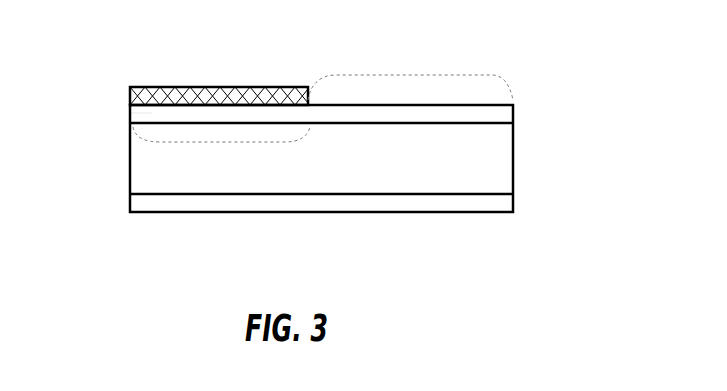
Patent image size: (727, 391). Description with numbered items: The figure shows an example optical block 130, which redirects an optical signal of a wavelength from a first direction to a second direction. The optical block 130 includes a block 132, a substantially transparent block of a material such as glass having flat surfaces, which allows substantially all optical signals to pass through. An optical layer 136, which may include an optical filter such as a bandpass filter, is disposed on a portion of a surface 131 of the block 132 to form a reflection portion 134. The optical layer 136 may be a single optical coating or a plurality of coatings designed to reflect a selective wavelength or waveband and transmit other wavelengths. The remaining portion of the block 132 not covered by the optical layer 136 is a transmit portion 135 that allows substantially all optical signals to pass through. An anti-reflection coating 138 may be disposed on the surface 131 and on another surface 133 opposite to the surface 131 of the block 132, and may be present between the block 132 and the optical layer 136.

The optical block 130 is at (498, 43).
The surface 131 is at (490, 119).
The block 132 is at (504, 178).
The surface 133 is at (463, 195).
The reflection portion 134 is at (222, 143).
The transmit portion 135 is at (413, 75).
The optical layer 136 is at (213, 98).
The anti-reflection coating 138 is at (152, 113).